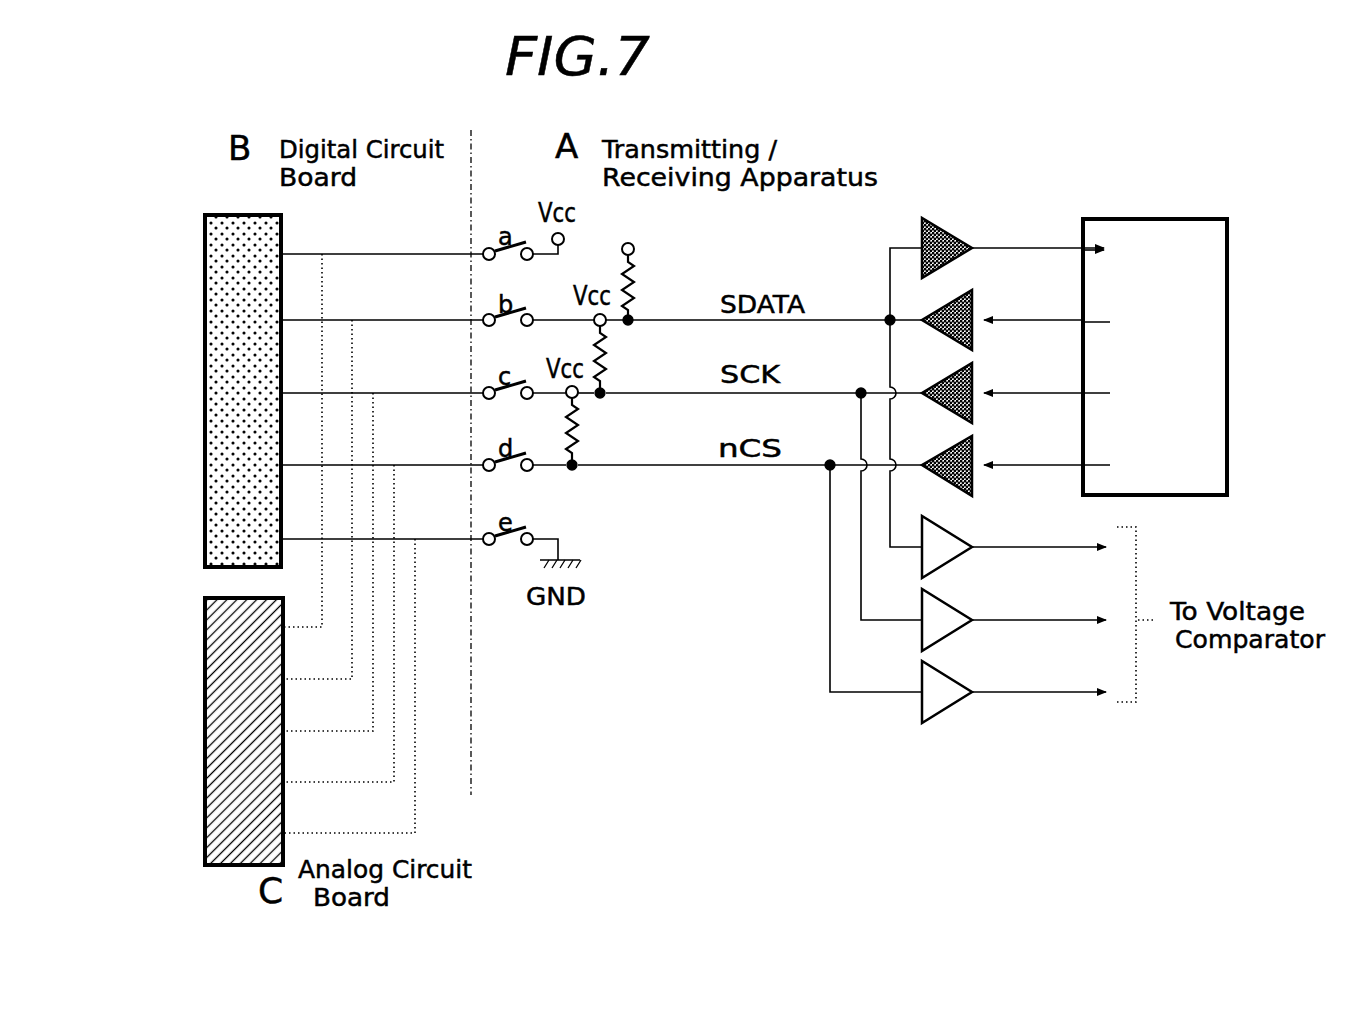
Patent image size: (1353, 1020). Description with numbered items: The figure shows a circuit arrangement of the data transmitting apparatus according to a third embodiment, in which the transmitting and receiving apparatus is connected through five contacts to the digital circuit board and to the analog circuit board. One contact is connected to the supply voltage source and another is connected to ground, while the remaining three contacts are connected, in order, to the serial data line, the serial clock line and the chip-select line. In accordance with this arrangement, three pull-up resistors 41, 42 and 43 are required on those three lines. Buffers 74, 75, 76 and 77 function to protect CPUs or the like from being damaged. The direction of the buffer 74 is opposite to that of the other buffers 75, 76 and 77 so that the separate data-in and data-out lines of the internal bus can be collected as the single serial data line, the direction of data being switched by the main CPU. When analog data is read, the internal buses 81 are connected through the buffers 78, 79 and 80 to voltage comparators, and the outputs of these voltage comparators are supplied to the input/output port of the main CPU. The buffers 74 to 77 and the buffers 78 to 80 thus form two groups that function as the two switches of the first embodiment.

The pull-up resistor 41 is at (636, 282).
The pull-up resistor 42 is at (608, 364).
The pull-up resistor 43 is at (580, 435).
The buffer 74 is at (950, 232).
The buffer 75 is at (972, 300).
The buffer 76 is at (972, 372).
The buffer 77 is at (972, 445).
The buffer 78 is at (955, 532).
The buffer 79 is at (955, 605).
The buffer 80 is at (955, 677).
The internal buses 81 is at (1228, 347).